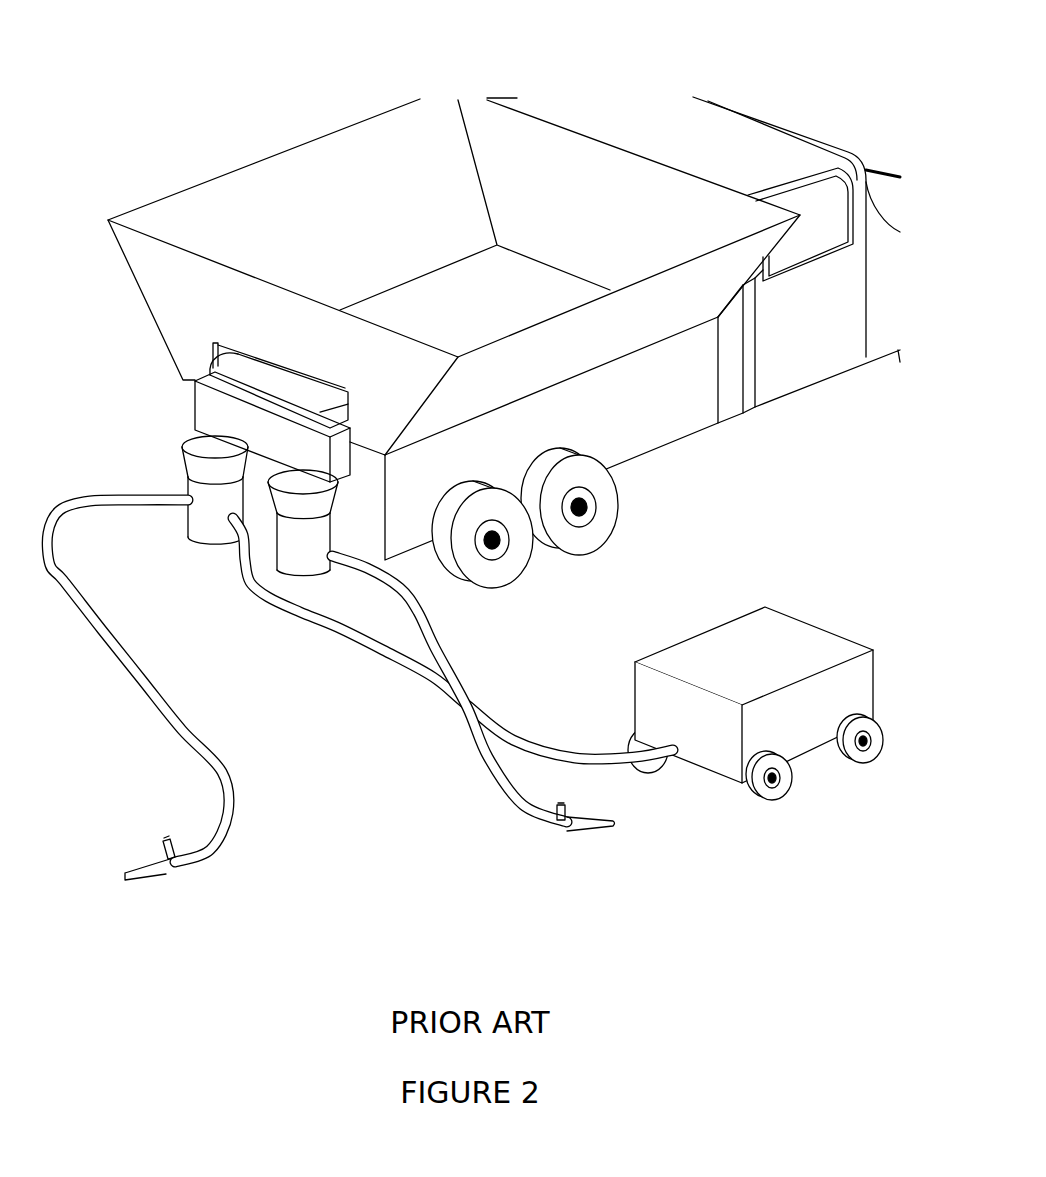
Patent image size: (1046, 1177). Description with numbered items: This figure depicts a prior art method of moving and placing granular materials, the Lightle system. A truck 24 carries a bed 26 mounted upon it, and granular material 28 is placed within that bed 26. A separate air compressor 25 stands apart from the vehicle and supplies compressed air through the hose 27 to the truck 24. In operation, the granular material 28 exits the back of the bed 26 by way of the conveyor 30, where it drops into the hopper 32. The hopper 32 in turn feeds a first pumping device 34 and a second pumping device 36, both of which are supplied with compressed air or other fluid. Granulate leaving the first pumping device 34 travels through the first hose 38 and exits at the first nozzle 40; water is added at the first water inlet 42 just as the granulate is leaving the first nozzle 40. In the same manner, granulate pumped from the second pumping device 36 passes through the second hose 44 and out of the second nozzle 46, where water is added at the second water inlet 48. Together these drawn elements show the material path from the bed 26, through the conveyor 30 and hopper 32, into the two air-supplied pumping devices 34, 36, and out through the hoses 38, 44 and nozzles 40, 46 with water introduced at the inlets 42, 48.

The truck 24 is at (750, 93).
The air compressor 25 is at (668, 647).
The bed 26 is at (594, 250).
The hose 27 is at (383, 651).
The granular material 28 is at (396, 218).
The conveyor 30 is at (243, 357).
The hopper 32 is at (195, 412).
The first pumping device 34 is at (165, 493).
The second pumping device 36 is at (307, 573).
The first hose 38 is at (228, 772).
The first nozzle 40 is at (138, 880).
The first water inlet 42 is at (163, 847).
The second hose 44 is at (470, 777).
The second nozzle 46 is at (597, 828).
The second water inlet 48 is at (562, 798).